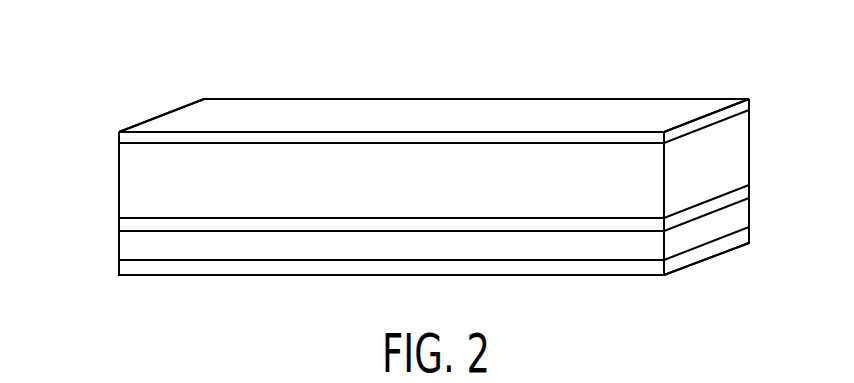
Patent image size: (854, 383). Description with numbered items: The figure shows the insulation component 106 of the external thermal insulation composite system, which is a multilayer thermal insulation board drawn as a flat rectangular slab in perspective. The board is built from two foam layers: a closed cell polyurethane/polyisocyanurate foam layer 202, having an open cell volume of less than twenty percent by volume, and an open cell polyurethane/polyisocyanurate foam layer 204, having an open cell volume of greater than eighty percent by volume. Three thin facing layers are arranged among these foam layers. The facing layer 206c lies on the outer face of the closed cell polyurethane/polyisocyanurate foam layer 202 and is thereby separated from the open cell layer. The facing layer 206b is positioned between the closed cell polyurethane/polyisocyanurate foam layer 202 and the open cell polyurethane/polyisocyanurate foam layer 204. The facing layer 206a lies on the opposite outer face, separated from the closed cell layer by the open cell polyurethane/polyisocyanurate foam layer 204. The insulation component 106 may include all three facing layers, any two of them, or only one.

The insulation component 106 is at (269, 78).
The closed cell polyurethane/polyisocyanurate foam layer 202 is at (128, 175).
The open cell polyurethane/polyisocyanurate foam layer 204 is at (128, 250).
The facing layer 206a is at (128, 267).
The facing layer 206b is at (128, 225).
The facing layer 206c is at (128, 138).